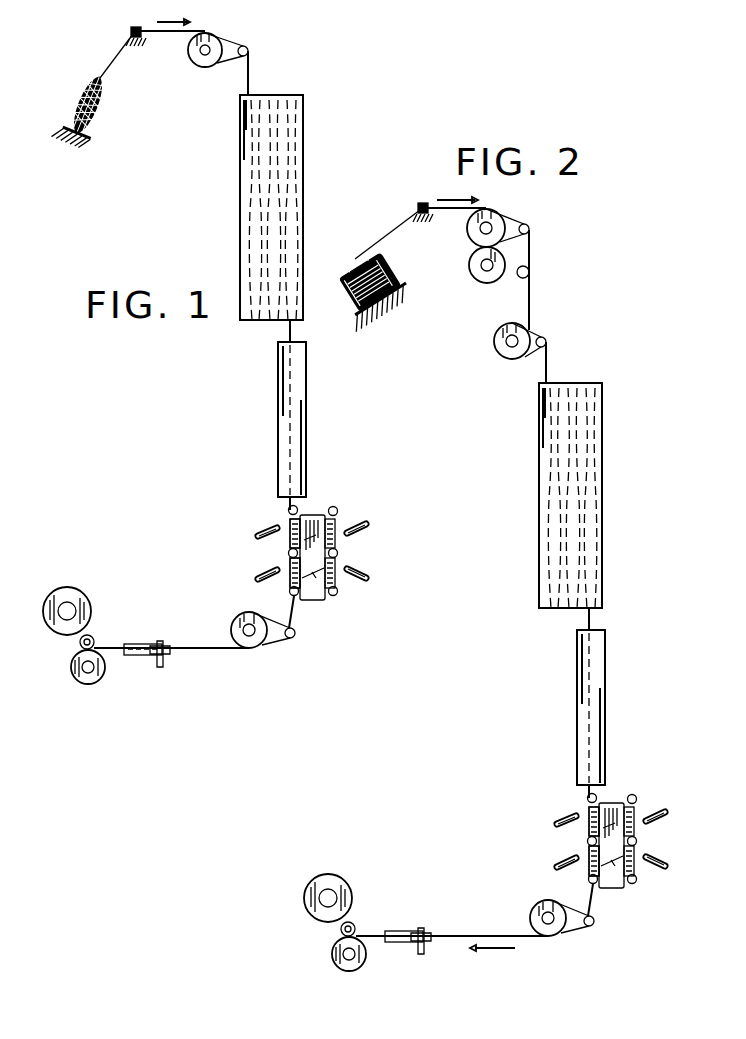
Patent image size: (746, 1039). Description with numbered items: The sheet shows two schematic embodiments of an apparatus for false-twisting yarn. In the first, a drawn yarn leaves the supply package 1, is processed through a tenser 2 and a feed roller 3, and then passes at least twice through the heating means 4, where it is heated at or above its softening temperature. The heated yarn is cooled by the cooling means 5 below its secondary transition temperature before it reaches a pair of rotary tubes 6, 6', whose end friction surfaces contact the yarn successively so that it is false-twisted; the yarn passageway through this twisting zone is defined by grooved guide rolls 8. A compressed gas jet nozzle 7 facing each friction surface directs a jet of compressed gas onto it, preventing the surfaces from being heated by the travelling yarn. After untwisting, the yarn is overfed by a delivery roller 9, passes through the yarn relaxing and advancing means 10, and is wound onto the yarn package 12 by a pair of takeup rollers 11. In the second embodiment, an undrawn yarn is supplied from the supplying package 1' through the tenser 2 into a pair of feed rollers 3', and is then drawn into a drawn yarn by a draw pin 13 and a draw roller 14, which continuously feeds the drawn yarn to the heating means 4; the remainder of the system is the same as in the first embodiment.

In FIG. 1, the supply package 1 is at (87, 110).
In FIG. 2, the supplying package 1' is at (376, 289).
In FIG. 1, the tenser 2 is at (130, 29).
In FIG. 2, the tenser 2 is at (415, 204).
In FIG. 1, the feed roller 3 is at (218, 65).
In FIG. 2, the pair of feed rollers 3' is at (482, 269).
In FIG. 1, the heating means 4 is at (304, 222).
In FIG. 2, the heating means 4 is at (583, 495).
In FIG. 1, the cooling means 5 is at (306, 423).
In FIG. 2, the cooling means 5 is at (602, 707).
In FIG. 1, the rotary tube 6 is at (273, 520).
In FIG. 2, the rotary tube 6 is at (572, 808).
In FIG. 1, the rotary tube 6' is at (277, 567).
In FIG. 2, the rotary tube 6' is at (576, 855).
In FIG. 1, the compressed gas jet nozzle 7 is at (256, 532).
In FIG. 2, the compressed gas jet nozzle 7 is at (594, 835).
In FIG. 1, the grooved guide rolls 8 is at (298, 510).
In FIG. 2, the grooved guide rolls 8 is at (612, 826).
In FIG. 1, the delivery roller 9 is at (251, 649).
In FIG. 2, the delivery roller 9 is at (562, 930).
In FIG. 1, the yarn relaxing and advancing means 10 is at (147, 656).
In FIG. 2, the yarn relaxing and advancing means 10 is at (416, 925).
In FIG. 1, the pair of takeup rollers 11 is at (80, 664).
In FIG. 2, the pair of takeup rollers 11 is at (331, 954).
In FIG. 1, the yarn package 12 is at (90, 604).
In FIG. 2, the yarn package 12 is at (349, 905).
In FIG. 2, the draw pin 13 is at (530, 272).
In FIG. 2, the draw roller 14 is at (507, 325).